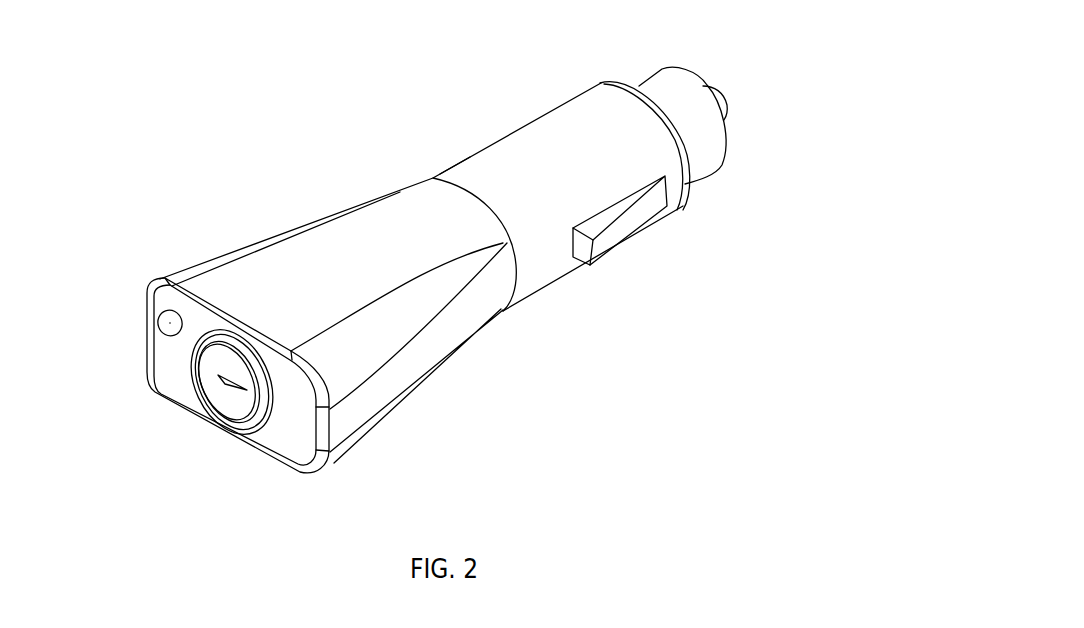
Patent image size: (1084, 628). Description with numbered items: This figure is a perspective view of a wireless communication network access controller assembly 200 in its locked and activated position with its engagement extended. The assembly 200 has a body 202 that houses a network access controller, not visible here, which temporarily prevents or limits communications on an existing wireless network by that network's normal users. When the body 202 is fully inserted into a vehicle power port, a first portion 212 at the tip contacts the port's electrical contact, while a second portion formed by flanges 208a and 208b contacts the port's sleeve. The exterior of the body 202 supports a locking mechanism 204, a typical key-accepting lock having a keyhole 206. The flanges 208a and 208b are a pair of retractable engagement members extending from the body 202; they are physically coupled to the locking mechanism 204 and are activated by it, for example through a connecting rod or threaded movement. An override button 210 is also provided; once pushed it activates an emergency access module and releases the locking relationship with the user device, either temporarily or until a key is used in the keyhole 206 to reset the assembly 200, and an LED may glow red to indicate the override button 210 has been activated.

The wireless communication network access controller assembly 200 is at (356, 161).
The body 202 is at (540, 263).
The locking mechanism 204 is at (250, 407).
The keyhole 206 is at (225, 378).
The flange 208a is at (462, 153).
The flange 208b is at (635, 222).
The override button 210 is at (165, 322).
The first portion 212 is at (722, 97).